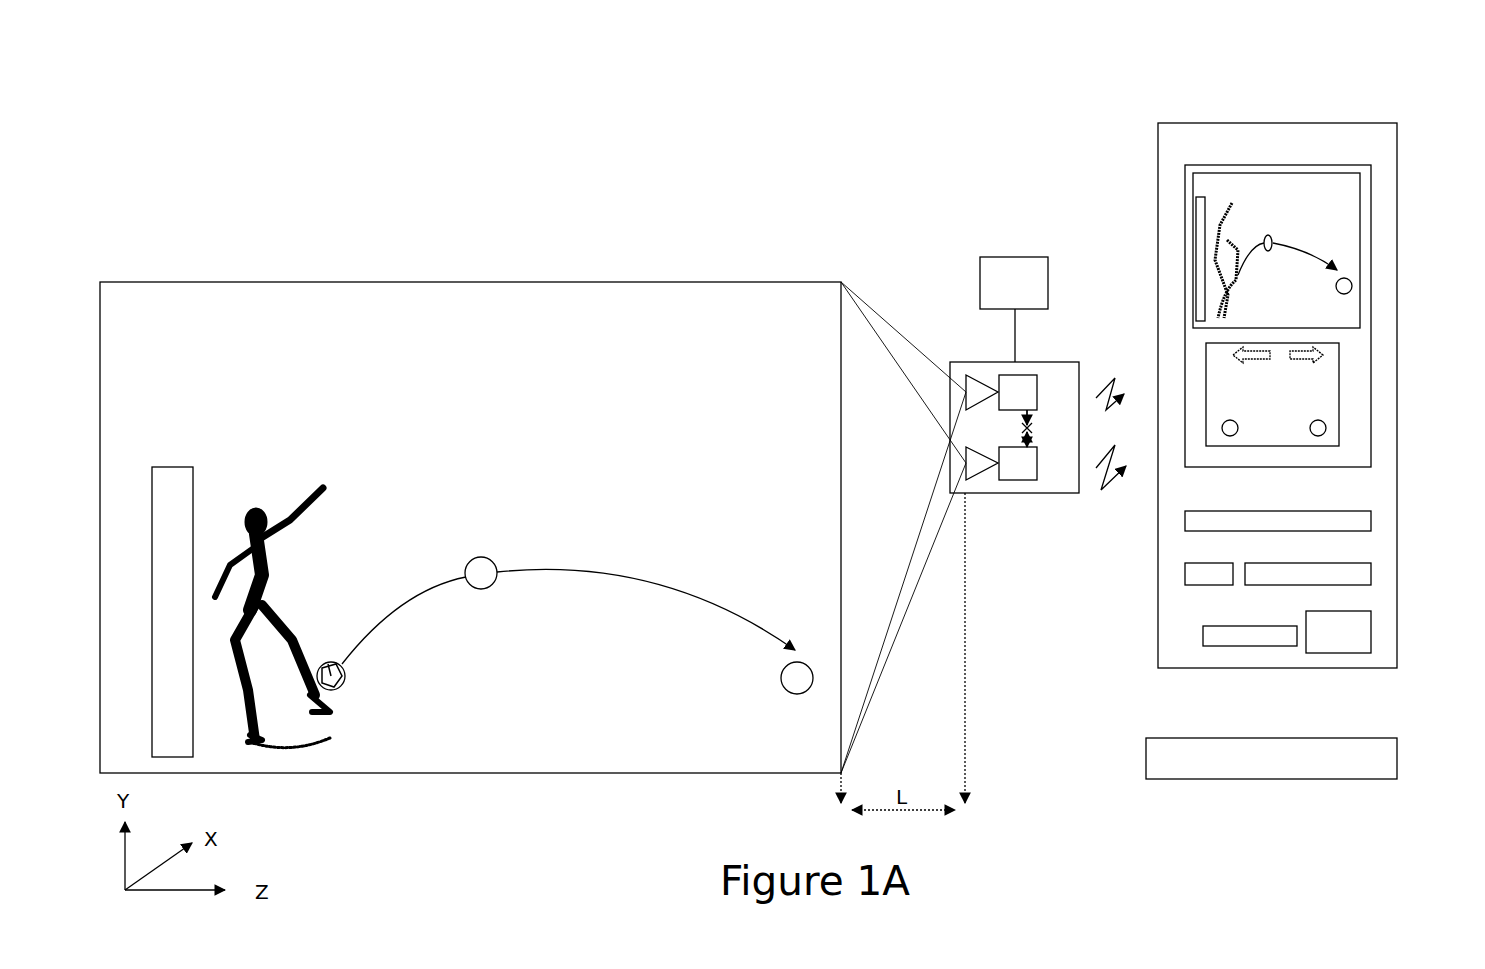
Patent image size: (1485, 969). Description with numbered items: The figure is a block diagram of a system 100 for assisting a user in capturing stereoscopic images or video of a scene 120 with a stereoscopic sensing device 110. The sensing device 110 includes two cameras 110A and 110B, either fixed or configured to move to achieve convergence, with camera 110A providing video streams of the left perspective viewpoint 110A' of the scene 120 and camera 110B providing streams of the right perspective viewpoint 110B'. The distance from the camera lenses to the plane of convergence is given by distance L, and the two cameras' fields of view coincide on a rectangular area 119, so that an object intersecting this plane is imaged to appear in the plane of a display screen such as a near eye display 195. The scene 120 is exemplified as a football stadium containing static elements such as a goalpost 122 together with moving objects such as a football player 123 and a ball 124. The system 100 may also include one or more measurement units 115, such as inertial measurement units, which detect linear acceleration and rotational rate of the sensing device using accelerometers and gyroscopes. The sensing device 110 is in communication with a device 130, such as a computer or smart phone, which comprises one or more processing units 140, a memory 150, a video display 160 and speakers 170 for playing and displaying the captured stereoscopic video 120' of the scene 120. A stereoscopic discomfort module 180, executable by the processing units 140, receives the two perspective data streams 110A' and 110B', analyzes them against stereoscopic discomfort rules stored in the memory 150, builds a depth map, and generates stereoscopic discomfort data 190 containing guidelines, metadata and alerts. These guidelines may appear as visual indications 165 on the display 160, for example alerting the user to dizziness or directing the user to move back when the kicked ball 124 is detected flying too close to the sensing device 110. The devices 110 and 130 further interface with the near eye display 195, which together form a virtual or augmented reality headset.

The system 100 is at (270, 112).
The stereoscopic sensing device 110 is at (1015, 493).
The camera 110A is at (1028, 496).
The camera 110B is at (1029, 367).
The left perspective viewpoint 110A' is at (1129, 500).
The right perspective viewpoint 110B' is at (1125, 367).
The measurement unit 115 is at (1015, 257).
The rectangular area 119 is at (841, 282).
The scene 120 is at (470, 502).
The captured stereoscopic video 120' is at (1331, 239).
The goalpost 122 is at (177, 467).
The football player 123 is at (258, 515).
The ball 124 is at (489, 559).
The device 130 is at (1278, 123).
The processing units 140 is at (1371, 521).
The memory 150 is at (1185, 573).
The video display 160 is at (1371, 228).
The indications 165 is at (1339, 393).
The speakers 170 is at (1371, 573).
The stereoscopic discomfort module 180 is at (1203, 636).
The stereoscopic discomfort data 190 is at (1371, 630).
The near eye display 195 is at (1272, 738).